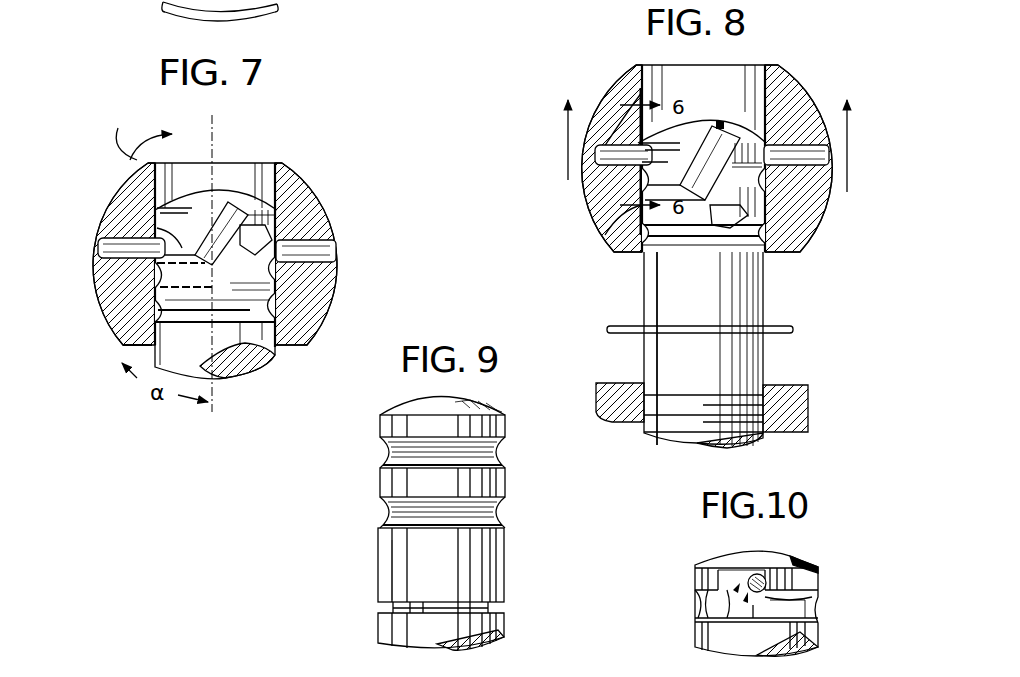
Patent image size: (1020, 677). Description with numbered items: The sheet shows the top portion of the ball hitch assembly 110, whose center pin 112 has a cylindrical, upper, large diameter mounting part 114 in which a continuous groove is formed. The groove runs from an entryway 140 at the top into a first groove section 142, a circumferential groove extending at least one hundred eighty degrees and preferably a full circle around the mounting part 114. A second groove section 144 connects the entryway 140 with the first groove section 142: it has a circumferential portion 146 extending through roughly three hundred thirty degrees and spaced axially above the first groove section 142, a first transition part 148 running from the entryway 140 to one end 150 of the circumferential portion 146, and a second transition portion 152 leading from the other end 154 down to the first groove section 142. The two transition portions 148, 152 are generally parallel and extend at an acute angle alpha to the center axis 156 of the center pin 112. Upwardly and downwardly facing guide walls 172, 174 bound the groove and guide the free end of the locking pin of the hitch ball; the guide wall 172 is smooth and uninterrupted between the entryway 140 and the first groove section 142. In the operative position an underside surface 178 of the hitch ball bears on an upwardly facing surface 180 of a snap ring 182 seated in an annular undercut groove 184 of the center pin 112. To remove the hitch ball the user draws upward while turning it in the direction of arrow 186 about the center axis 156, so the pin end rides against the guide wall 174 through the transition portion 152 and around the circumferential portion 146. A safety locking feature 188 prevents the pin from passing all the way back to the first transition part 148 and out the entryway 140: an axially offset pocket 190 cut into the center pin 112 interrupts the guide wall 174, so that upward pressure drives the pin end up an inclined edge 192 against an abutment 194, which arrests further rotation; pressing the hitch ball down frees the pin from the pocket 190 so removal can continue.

In FIG. 7, the ball hitch assembly 110 is at (385, 198).
In FIG. 8, the ball hitch assembly 110 is at (822, 92).
In FIG. 7, the center pin 112 is at (258, 340).
In FIG. 8, the center pin 112 is at (743, 280).
In FIG. 9, the center pin 112 is at (440, 524).
In FIG. 10, the center pin 112 is at (820, 627).
In FIG. 7, the mounting part 114 is at (280, 355).
In FIG. 9, the mounting part 114 is at (410, 555).
In FIG. 7, the entryway 140 is at (236, 198).
In FIG. 8, the entryway 140 is at (722, 122).
In FIG. 7, the first groove section 142 is at (318, 327).
In FIG. 8, the first groove section 142 is at (640, 232).
In FIG. 9, the first groove section 142 is at (498, 512).
In FIG. 7, the second groove section 144 is at (155, 218).
In FIG. 8, the second groove section 144 is at (623, 155).
In FIG. 7, the circumferential portion 146 is at (298, 248).
In FIG. 8, the circumferential portion 146 is at (796, 155).
In FIG. 9, the circumferential portion 146 is at (500, 452).
In FIG. 7, the first transition part 148 is at (195, 237).
In FIG. 8, the first transition part 148 is at (650, 140).
In FIG. 7, the one end of circumferential groove portion 150 is at (173, 262).
In FIG. 7, the second transition portion 152 is at (300, 287).
In FIG. 7, the other end of circumferential portion 154 is at (290, 220).
In FIG. 7, the center axis 156 is at (214, 140).
In FIG. 10, the upwardly facing guide wall 172 is at (717, 612).
In FIG. 7, the downwardly facing guide wall 174 is at (262, 132).
In FIG. 8, the downwardly facing guide wall 174 is at (630, 180).
In FIG. 10, the downwardly facing guide wall 174 is at (812, 597).
In FIG. 7, the underside surface 178 is at (123, 350).
In FIG. 8, the upwardly facing surface 180 is at (778, 323).
In FIG. 8, the snap ring 182 is at (800, 334).
In FIG. 9, the undercut groove 184 is at (495, 607).
In FIG. 7, the arrow 186 is at (126, 139).
In FIG. 10, the safety locking feature 188 is at (757, 555).
In FIG. 10, the pocket 190 is at (733, 580).
In FIG. 10, the inclined edge 192 is at (722, 595).
In FIG. 10, the abutment 194 is at (753, 618).